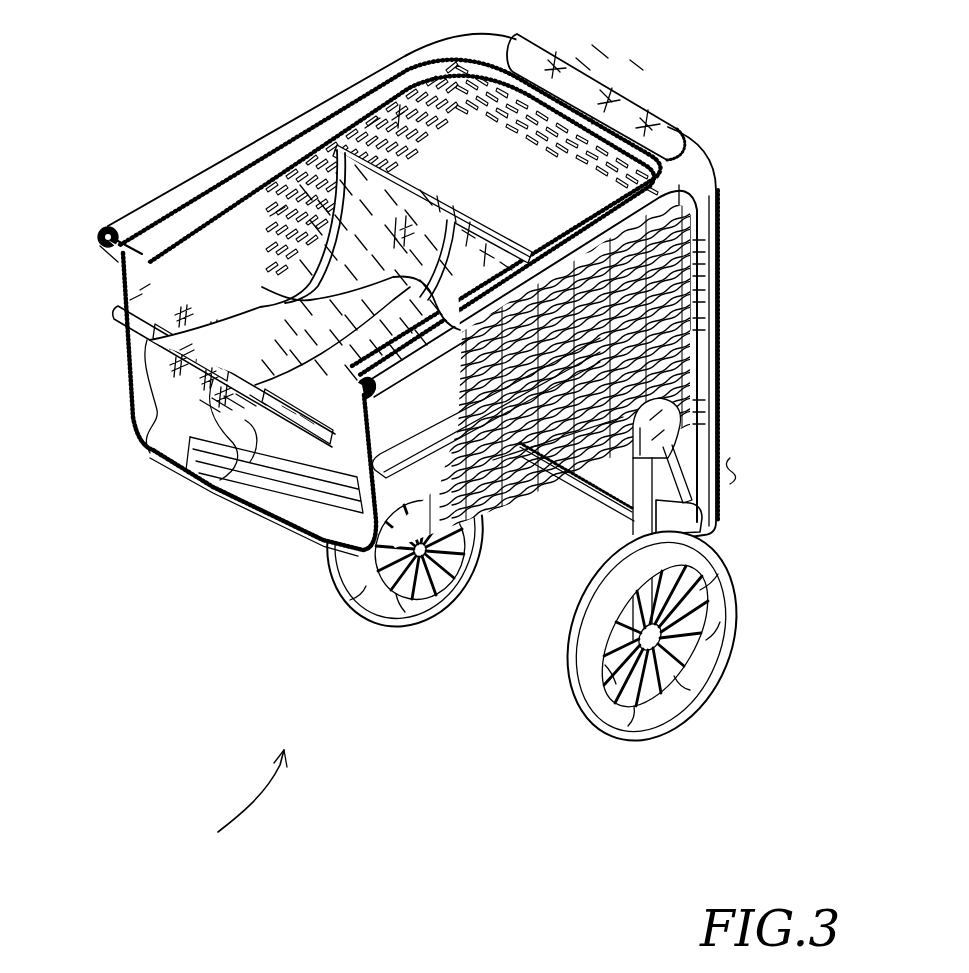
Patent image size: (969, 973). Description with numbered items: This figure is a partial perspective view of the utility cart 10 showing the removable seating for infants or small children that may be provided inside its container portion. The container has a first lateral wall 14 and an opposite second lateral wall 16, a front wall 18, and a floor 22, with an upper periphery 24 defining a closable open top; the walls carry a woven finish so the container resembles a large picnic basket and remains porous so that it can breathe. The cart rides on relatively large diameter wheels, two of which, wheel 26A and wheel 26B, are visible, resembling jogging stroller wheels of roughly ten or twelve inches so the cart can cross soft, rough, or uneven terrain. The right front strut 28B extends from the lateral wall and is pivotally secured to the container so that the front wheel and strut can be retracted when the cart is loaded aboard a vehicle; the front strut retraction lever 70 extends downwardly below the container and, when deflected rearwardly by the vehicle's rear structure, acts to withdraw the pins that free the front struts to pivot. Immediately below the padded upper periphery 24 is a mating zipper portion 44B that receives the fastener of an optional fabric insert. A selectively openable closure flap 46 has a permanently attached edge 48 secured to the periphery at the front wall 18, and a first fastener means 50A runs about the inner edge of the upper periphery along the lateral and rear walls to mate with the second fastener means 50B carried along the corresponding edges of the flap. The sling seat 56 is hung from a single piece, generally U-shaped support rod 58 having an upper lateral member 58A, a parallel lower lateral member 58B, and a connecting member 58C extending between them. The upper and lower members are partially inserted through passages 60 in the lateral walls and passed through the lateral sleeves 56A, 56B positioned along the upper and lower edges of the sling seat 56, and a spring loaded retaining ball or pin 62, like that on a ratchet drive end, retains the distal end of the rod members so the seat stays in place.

The utility cart 10 is at (228, 819).
The first lateral wall 14 is at (192, 302).
The second lateral wall 16 is at (441, 401).
The front wall 18 is at (568, 222).
The floor 22 is at (318, 510).
The upper periphery 24 is at (113, 238).
The wheel 26A is at (427, 604).
The wheel 26B is at (620, 742).
The right front strut 28B is at (623, 513).
The mating zipper portion 44B is at (282, 173).
The closure flap 46 is at (713, 480).
The permanently attached edge 48 is at (573, 117).
The first fastener means 50A is at (350, 105).
The second fastener means 50B is at (717, 222).
The sling seat 56 is at (272, 308).
The lateral sleeve 56A is at (493, 233).
The lateral sleeve 56B is at (160, 446).
The support rod 58 is at (365, 519).
The upper lateral member 58A is at (443, 201).
The lower lateral member 58B is at (232, 463).
The connecting member 58C is at (445, 427).
The passage 60 is at (282, 207).
The spring loaded retaining ball or pin 62 is at (117, 314).
The front strut retraction lever 70 is at (713, 507).